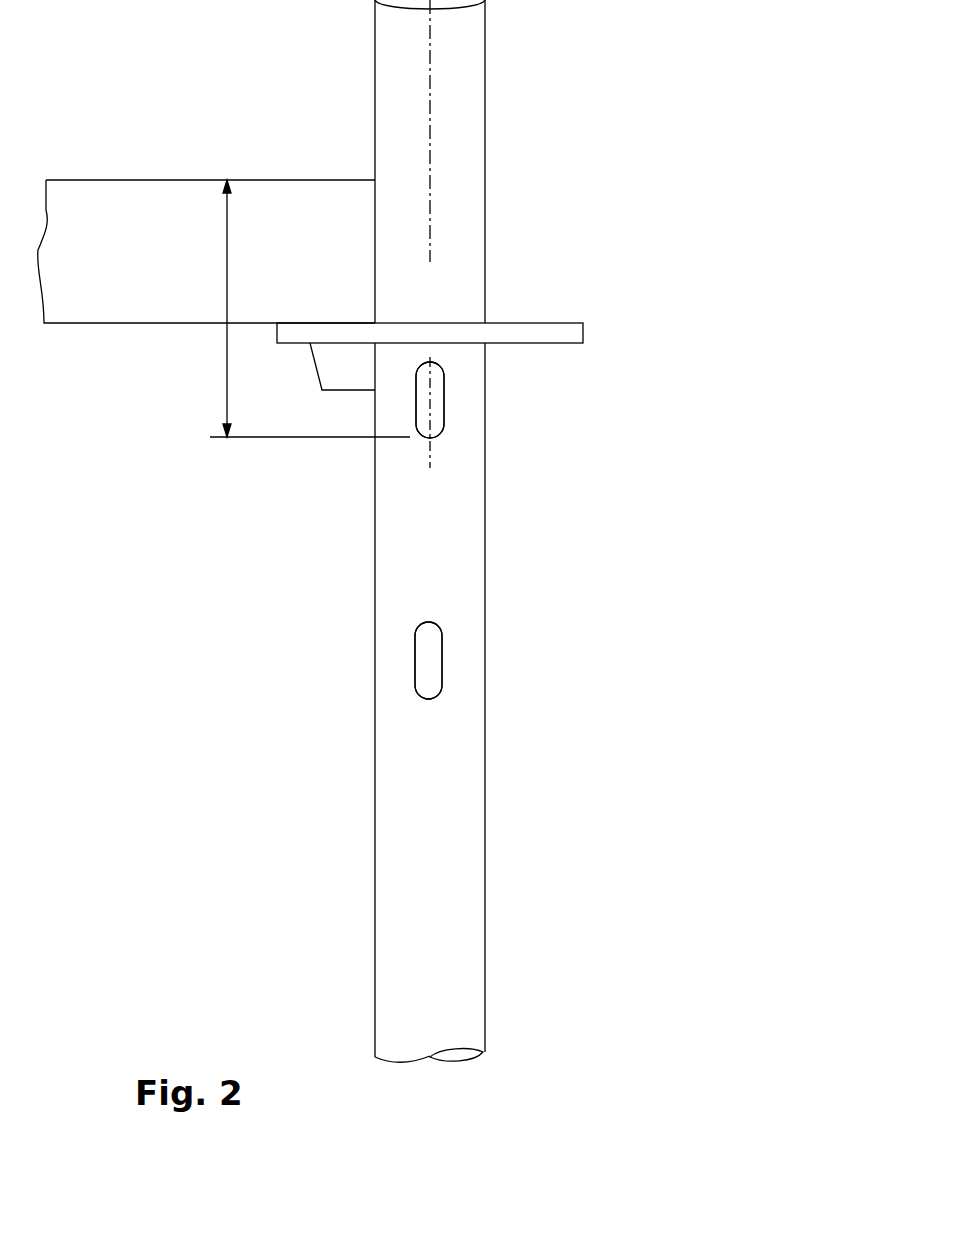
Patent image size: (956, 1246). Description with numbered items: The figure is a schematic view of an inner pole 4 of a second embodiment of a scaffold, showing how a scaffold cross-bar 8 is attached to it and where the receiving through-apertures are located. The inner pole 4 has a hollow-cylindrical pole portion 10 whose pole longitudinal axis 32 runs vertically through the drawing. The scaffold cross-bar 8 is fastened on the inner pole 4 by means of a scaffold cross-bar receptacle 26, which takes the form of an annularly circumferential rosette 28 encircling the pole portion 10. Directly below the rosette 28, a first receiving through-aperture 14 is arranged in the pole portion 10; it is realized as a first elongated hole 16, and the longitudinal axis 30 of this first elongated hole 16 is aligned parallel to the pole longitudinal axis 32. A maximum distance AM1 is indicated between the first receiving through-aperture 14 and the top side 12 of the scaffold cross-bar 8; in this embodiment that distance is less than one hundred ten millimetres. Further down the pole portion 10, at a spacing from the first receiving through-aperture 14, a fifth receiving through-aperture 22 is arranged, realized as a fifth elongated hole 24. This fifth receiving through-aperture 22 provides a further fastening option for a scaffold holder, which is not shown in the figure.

The inner pole 4 is at (449, 803).
The scaffold cross-bar 8 is at (150, 208).
The hollow-cylindrical pole portion 10 is at (515, 530).
The top side 12 is at (83, 176).
The first receiving through-aperture 14 is at (433, 412).
The first elongated hole 16 is at (430, 400).
The fifth receiving through-aperture 22 is at (428, 648).
The fifth elongated hole 24 is at (428, 660).
The scaffold cross-bar receptacle 26 is at (348, 332).
The rosette 28 is at (540, 332).
The longitudinal axis 30 is at (430, 455).
The pole longitudinal axis 32 is at (430, 88).
The maximum distance AM1 is at (227, 377).